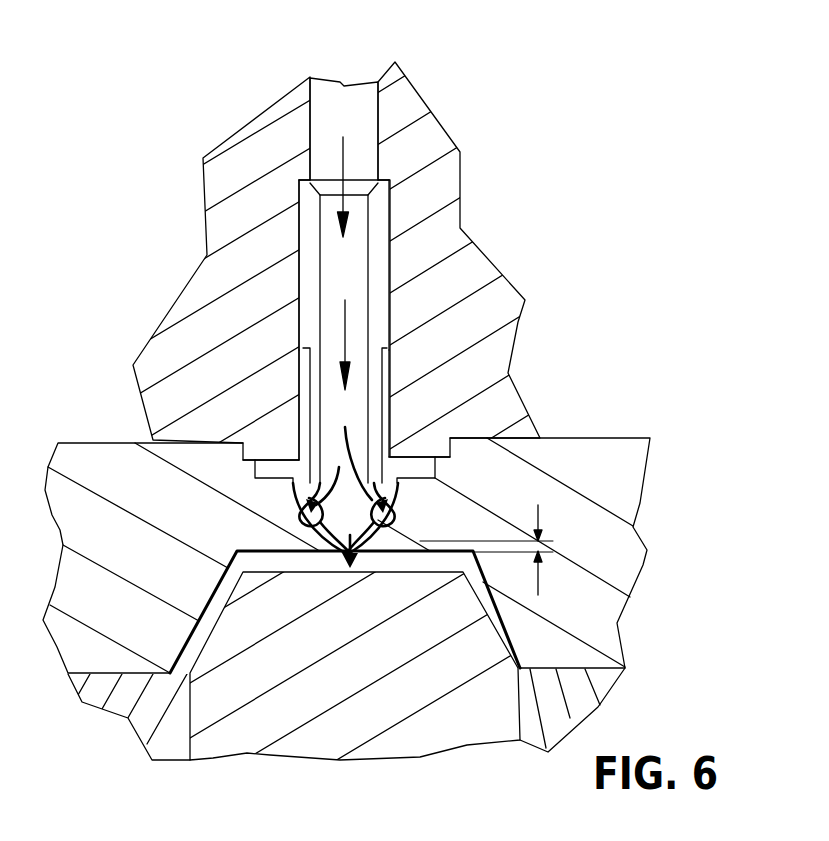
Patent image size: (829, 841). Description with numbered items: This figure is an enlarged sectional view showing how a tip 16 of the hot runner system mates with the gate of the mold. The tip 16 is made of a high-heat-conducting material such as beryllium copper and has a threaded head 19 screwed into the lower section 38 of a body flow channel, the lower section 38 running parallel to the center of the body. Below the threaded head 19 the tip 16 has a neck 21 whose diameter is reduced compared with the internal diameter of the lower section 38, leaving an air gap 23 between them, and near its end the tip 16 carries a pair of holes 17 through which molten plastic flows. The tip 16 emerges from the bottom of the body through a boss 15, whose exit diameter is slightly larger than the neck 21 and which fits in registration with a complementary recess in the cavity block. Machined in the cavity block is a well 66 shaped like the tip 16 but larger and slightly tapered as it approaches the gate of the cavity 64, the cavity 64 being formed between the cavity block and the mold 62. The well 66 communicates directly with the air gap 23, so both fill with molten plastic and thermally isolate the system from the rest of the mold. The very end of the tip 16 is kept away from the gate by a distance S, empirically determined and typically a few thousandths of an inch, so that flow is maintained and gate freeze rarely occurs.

The lower section 38 is at (378, 84).
The tip 16 is at (400, 268).
The threaded head 19 is at (385, 228).
The neck 21 is at (387, 366).
The air gap 23 is at (388, 418).
The well 66 is at (274, 472).
The boss 15 is at (237, 446).
The holes 17 is at (296, 486).
The cavity 64 is at (510, 637).
The mold 62 is at (467, 728).
The distance S is at (486, 536).